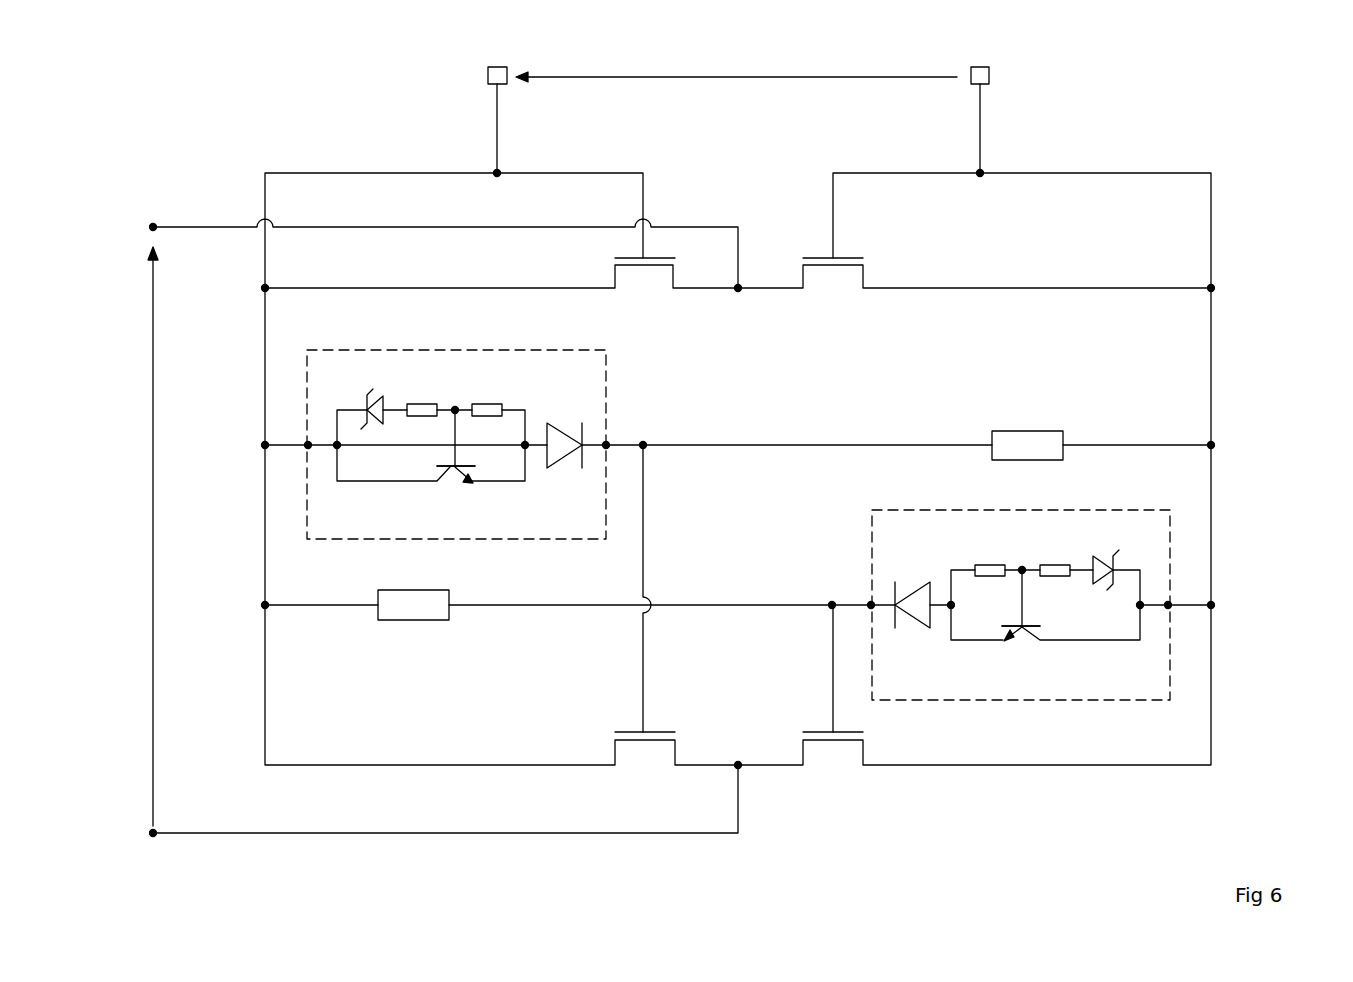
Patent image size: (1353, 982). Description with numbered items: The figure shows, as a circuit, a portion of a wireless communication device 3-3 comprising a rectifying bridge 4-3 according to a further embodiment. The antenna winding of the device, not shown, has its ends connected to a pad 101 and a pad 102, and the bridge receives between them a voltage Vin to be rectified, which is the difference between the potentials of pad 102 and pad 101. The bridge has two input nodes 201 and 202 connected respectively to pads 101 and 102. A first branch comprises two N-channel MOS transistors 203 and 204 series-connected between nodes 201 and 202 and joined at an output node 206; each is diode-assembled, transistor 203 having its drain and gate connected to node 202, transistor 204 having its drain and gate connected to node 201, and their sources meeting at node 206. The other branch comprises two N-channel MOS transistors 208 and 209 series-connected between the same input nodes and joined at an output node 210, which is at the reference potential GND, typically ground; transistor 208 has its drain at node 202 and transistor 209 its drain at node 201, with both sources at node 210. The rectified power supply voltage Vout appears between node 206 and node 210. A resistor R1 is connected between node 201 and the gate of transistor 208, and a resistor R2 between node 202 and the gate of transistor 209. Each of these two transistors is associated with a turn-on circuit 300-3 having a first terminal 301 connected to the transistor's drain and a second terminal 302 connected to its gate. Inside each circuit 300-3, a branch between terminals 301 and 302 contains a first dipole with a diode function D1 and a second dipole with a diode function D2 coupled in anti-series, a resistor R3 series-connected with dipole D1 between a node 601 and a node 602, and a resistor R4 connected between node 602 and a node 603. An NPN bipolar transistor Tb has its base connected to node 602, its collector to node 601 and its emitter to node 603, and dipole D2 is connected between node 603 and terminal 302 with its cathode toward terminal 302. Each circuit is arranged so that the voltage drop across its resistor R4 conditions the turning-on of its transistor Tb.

The pad 101 is at (980, 66).
The pad 102 is at (497, 66).
The node 201 is at (983, 172).
The node 202 is at (500, 172).
The N-channel MOS transistor 203 is at (646, 294).
The N-channel MOS transistor 204 is at (836, 294).
The output node 206 is at (155, 225).
The N-channel MOS transistor 208 is at (643, 770).
The N-channel MOS transistor 209 is at (833, 770).
The output node 210 is at (153, 838).
The turn-on circuit 300-3 is at (435, 350).
The first terminal 301 is at (307, 443).
The second terminal 302 is at (607, 443).
The node 601 is at (336, 443).
The node 602 is at (455, 409).
The node 603 is at (526, 443).
The device 3-3 is at (1195, 63).
The rectifying bridge 4-3 is at (1245, 264).
The resistor R1 is at (1030, 430).
The resistor R2 is at (410, 622).
The resistor R3 is at (738, 479).
The resistor R4 is at (738, 479).
The first dipole with a diode function D1 is at (373, 421).
The second dipole with a diode function D2 is at (567, 461).
The transistor Tb is at (452, 482).
The voltage Vin is at (738, 77).
The rectified power supply voltage Vout is at (153, 398).
The reference potential GND is at (113, 836).